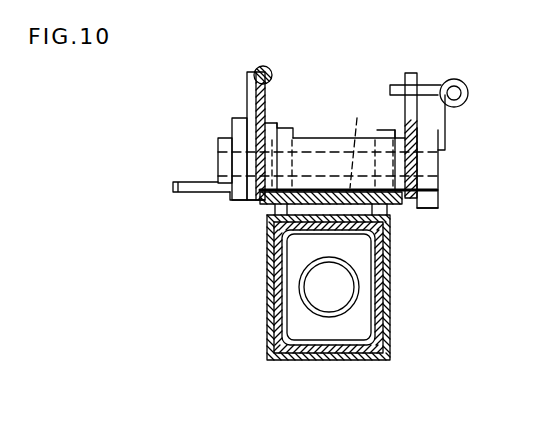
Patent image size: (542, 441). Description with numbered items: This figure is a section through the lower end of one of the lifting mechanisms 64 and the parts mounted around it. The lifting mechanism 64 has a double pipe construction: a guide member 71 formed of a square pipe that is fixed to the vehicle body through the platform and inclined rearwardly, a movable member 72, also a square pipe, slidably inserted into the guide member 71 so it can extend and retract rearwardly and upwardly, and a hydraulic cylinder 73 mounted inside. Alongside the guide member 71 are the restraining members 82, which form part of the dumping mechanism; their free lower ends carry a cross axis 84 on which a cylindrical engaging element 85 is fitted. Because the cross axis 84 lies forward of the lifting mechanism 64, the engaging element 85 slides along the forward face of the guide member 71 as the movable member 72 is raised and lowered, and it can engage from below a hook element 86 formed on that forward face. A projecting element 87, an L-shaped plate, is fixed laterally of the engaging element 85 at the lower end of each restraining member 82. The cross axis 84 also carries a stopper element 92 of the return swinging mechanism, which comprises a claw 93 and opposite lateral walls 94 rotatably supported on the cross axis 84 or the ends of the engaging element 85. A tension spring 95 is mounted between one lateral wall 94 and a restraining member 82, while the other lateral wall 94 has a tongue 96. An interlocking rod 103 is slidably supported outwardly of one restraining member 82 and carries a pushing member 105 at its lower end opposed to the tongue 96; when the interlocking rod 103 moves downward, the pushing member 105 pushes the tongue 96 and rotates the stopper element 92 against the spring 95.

The lifting mechanism 64 is at (328, 326).
The guide member 71 is at (295, 359).
The movable member 72 is at (318, 353).
The hydraulic cylinder 73 is at (342, 316).
The restraining member 82 is at (237, 200).
The cross axis 84 is at (364, 141).
The engaging element 85 is at (310, 138).
The hook element 86 is at (378, 210).
The projecting element 87 is at (178, 191).
The stopper element 92 is at (503, 143).
The claw 93 is at (350, 190).
The lateral wall 94 is at (257, 158).
The tension spring 95 is at (258, 68).
The tongue 96 is at (409, 73).
The interlocking rod 103 is at (455, 95).
The pushing member 105 is at (428, 90).